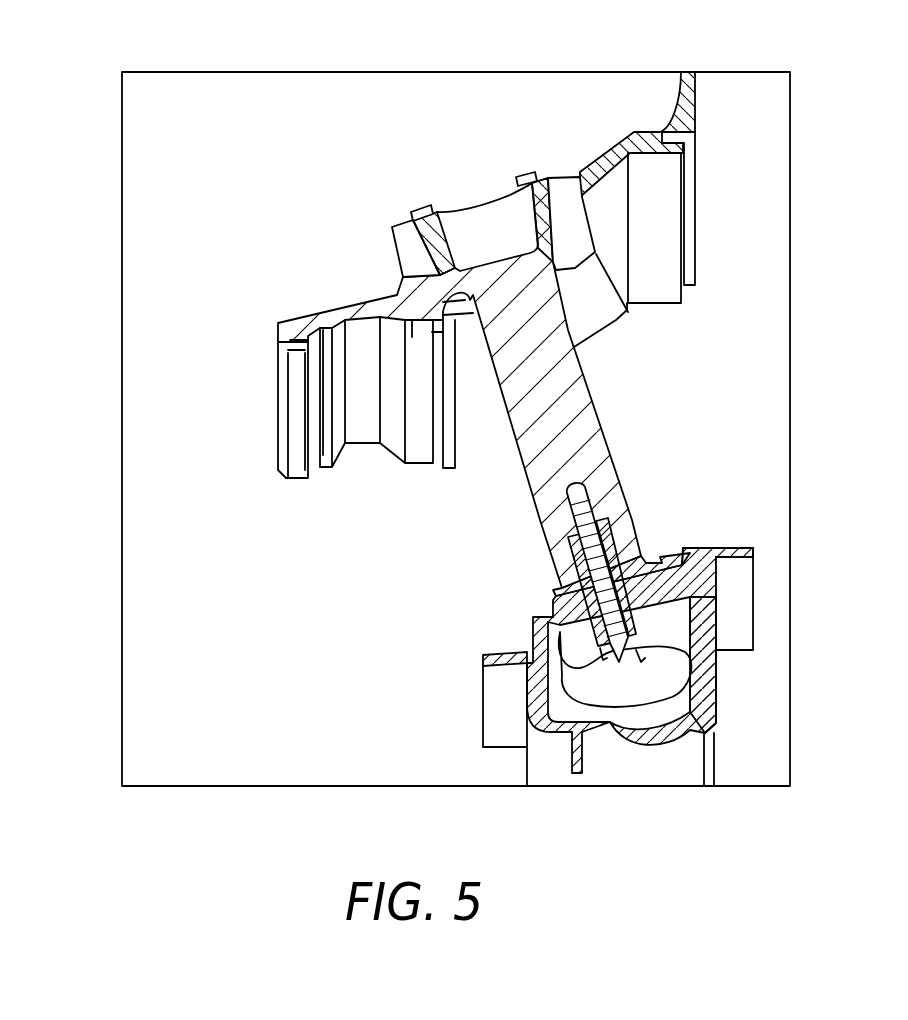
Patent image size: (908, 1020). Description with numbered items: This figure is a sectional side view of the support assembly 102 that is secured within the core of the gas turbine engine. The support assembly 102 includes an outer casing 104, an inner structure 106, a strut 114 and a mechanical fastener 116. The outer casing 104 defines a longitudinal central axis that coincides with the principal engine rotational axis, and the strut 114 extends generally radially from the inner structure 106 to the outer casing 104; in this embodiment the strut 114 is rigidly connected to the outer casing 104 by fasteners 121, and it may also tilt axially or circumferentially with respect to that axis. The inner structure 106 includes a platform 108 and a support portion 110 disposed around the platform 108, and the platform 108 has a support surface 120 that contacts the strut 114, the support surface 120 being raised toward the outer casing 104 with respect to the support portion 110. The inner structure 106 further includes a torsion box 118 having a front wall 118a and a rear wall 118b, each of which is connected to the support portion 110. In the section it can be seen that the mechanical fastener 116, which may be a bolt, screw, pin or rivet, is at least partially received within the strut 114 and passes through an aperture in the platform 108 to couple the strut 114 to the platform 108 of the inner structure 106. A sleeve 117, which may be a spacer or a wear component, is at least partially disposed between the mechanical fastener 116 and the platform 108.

The support assembly 102 is at (190, 192).
The outer casing 104 is at (670, 107).
The inner structure 106 is at (467, 722).
The platform 108 is at (642, 585).
The support portion 110 is at (672, 553).
The strut 114 is at (600, 418).
The mechanical fastener 116 is at (605, 492).
The sleeve 117 is at (553, 555).
The torsion box 118 is at (722, 767).
The front wall 118a is at (543, 642).
The rear wall 118b is at (708, 697).
The support surface 120 is at (648, 565).
The fasteners 121 is at (527, 172).